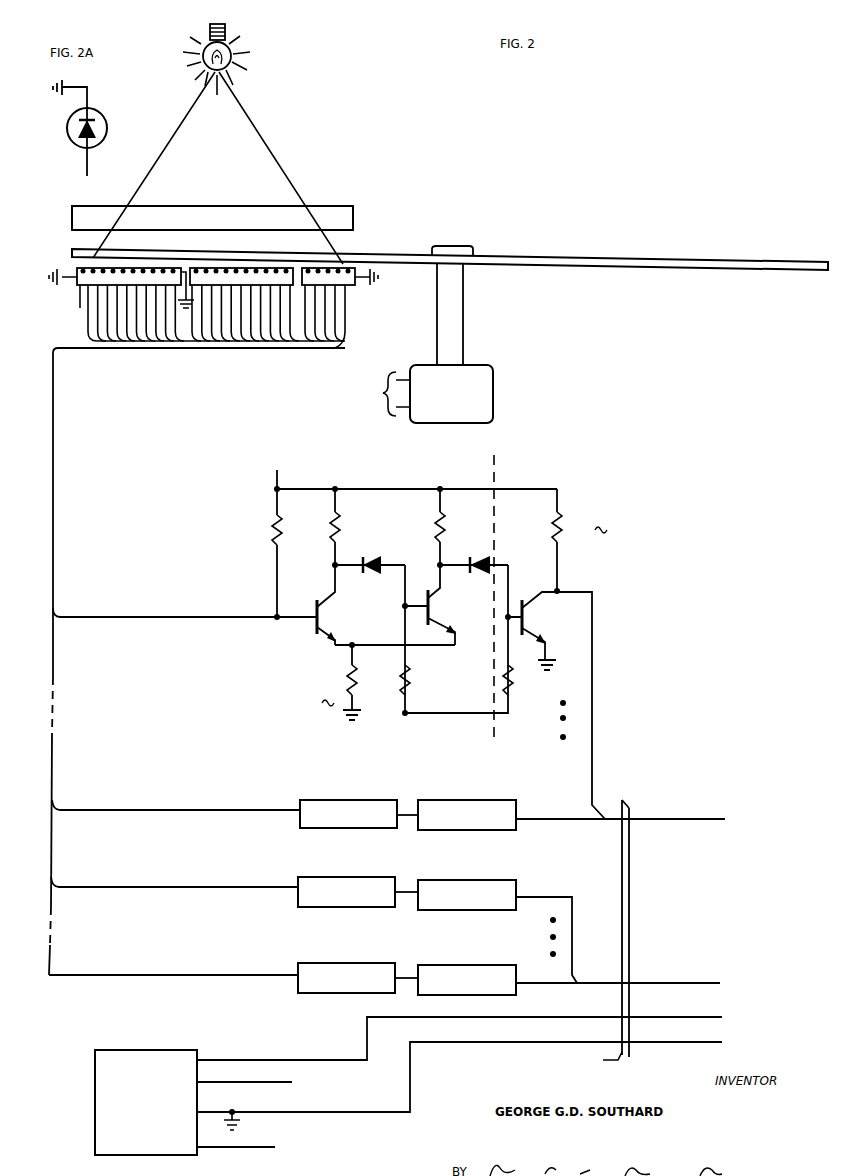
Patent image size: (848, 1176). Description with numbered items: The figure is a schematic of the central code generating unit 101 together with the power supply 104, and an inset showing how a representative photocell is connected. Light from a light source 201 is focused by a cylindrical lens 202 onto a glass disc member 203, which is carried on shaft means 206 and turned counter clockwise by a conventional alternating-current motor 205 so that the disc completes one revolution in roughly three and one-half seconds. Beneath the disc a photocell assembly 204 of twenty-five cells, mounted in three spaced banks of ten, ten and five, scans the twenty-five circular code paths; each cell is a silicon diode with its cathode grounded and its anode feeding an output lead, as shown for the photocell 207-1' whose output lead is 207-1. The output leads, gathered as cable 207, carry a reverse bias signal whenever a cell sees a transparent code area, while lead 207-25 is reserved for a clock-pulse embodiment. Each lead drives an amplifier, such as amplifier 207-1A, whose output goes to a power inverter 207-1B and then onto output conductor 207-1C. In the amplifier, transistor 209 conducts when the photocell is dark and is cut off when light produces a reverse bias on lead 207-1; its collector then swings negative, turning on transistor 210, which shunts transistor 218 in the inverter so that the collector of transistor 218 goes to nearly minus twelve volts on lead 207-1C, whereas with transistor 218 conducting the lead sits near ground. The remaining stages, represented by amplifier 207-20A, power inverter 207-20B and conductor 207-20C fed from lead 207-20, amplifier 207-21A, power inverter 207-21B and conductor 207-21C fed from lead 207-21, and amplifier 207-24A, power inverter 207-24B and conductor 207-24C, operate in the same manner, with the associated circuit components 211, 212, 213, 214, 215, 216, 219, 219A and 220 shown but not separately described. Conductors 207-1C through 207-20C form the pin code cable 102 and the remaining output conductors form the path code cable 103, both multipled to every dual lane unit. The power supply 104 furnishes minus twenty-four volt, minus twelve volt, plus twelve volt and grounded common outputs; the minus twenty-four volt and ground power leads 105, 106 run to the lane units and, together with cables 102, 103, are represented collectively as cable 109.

In FIG. 2, the central code generating unit 101 is at (540, 79).
In FIG. 2, the pin code cable 102 is at (688, 835).
In FIG. 2, the path code cable 103 is at (655, 985).
In FIG. 2, the power supply 104 is at (150, 1050).
In FIG. 2, the power lead 105 is at (655, 1021).
In FIG. 2, the power lead 106 is at (657, 1045).
In FIG. 2, the cable 109 is at (597, 1057).
In FIG. 2, the light source 201 is at (256, 58).
In FIG. 2, the cylindrical lens 202 is at (345, 203).
In FIG. 2, the glass disc member 203 is at (643, 257).
In FIG. 2, the photocell assembly 204 is at (213, 335).
In FIG. 2, the motor 205 is at (493, 391).
In FIG. 2, the shaft means 206 is at (465, 317).
In FIG. 2, the cable 207 is at (55, 388).
In FIG. 2A, the output lead 207-1 is at (57, 162).
In FIG. 2, the output lead 207-1 is at (168, 451).
In FIG. 2A, the photocell 207-1' is at (64, 114).
In FIG. 2, the output lead 207-25 is at (80, 308).
In FIG. 2, the amplifier circuit 207-1A is at (400, 595).
In FIG. 2, the power inverter 207-1B is at (516, 597).
In FIG. 2, the pin code lead 207-1C is at (594, 600).
In FIG. 2, the transistor 209 is at (337, 605).
In FIG. 2, the transistor 210 is at (435, 605).
In FIG. 2, the resistor 80K 211 is at (278, 554).
In FIG. 2, the resistor 3.9K 212 is at (342, 528).
In FIG. 2, the diode 213 is at (370, 556).
In FIG. 2, the resistor 15 ohm 214 is at (333, 682).
In FIG. 2, the resistor 4.7K 215 is at (445, 528).
In FIG. 2, the diode 216 is at (474, 556).
In FIG. 2, the transistor 218 is at (550, 631).
In FIG. 2, the resistor 10K 219 is at (523, 688).
In FIG. 2, the resistor 22K 219A is at (426, 679).
In FIG. 2, the resistor 470 ohm 220 is at (567, 541).
In FIG. 2, the output lead 207-20 is at (142, 810).
In FIG. 2, the amplifier circuit 207-20A is at (359, 793).
In FIG. 2, the power inverter 207-20B is at (479, 795).
In FIG. 2, the pin code lead 207-20C is at (530, 820).
In FIG. 2, the output lead 207-21 is at (140, 887).
In FIG. 2, the amplifier circuit 207-21A is at (358, 875).
In FIG. 2, the power inverter 207-21B is at (478, 877).
In FIG. 2, the path code lead 207-21C is at (550, 931).
In FIG. 2, the amplifier circuit 207-24A is at (358, 961).
In FIG. 2, the power inverter 207-24B is at (478, 962).
In FIG. 2, the path code lead 207-24C is at (618, 991).